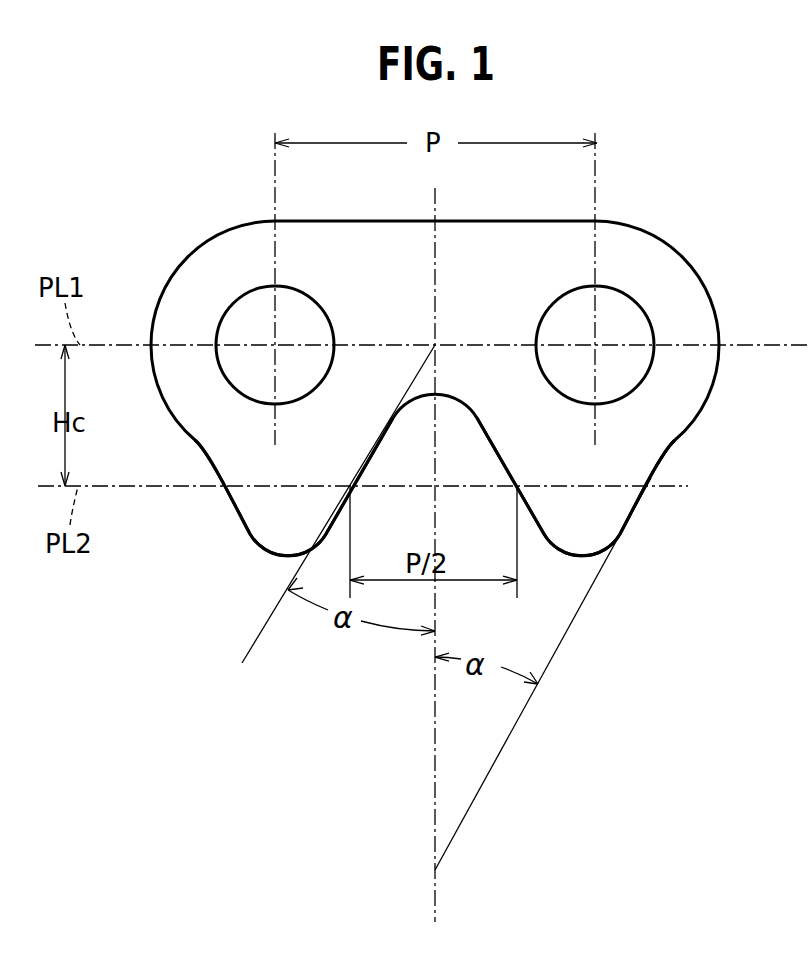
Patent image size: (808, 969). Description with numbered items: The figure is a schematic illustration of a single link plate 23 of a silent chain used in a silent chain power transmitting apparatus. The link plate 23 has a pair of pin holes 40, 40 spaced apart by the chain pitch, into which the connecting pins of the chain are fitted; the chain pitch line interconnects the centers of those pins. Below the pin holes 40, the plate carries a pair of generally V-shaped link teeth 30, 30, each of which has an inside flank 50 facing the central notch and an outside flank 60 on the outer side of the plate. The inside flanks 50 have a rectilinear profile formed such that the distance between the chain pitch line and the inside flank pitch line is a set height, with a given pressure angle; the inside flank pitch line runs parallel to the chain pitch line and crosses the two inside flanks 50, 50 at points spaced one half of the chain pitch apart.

The link plate 23 is at (673, 245).
The pin hole 40 is at (240, 300).
The V-shaped link tooth 30 is at (283, 522).
The inside flank 50 is at (363, 465).
The outside flank 60 is at (222, 495).